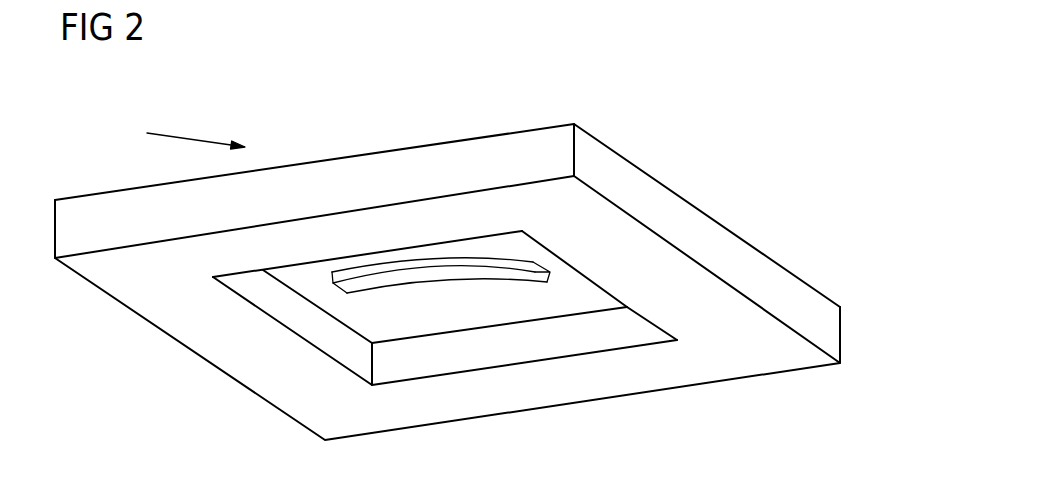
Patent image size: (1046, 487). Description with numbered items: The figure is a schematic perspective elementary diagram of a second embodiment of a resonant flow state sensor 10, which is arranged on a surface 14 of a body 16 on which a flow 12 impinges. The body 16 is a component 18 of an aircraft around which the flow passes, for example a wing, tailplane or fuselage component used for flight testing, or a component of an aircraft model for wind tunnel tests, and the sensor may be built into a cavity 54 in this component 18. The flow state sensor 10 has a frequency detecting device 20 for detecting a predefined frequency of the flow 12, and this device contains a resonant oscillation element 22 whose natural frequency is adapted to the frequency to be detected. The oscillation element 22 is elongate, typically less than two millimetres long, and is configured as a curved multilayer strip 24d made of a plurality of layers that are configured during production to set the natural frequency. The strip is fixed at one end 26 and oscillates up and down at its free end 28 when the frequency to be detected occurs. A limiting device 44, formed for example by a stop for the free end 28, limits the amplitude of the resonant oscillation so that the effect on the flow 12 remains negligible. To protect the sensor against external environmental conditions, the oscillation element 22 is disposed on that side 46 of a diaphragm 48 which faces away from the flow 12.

The flow state sensor 10 is at (474, 236).
The flow 12 is at (187, 136).
The surface 14 is at (688, 199).
The body 16 is at (728, 245).
The component 18 is at (834, 392).
The frequency detecting device 20 is at (498, 372).
The oscillation element 22 is at (392, 297).
The curved strip element 24d is at (431, 218).
The fixed end 26 is at (340, 248).
The free end 28 is at (515, 241).
The limiting device 44 is at (536, 249).
The side of the diaphragm facing away from the flow 46 is at (586, 293).
The diaphragm 48 is at (322, 296).
The cavity 54 is at (605, 351).